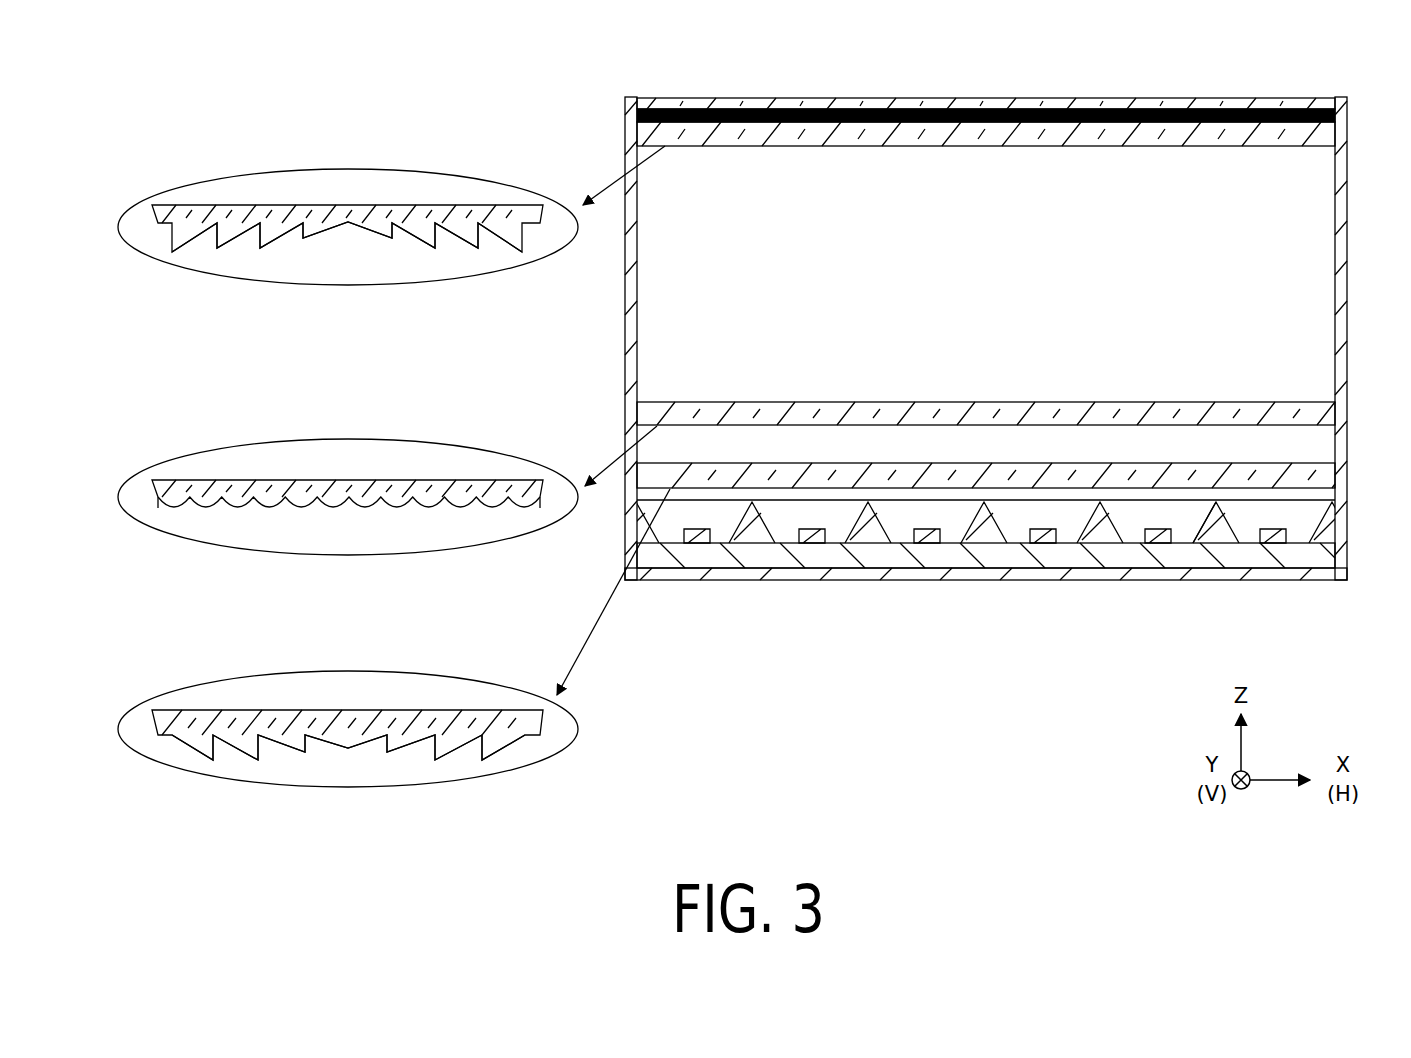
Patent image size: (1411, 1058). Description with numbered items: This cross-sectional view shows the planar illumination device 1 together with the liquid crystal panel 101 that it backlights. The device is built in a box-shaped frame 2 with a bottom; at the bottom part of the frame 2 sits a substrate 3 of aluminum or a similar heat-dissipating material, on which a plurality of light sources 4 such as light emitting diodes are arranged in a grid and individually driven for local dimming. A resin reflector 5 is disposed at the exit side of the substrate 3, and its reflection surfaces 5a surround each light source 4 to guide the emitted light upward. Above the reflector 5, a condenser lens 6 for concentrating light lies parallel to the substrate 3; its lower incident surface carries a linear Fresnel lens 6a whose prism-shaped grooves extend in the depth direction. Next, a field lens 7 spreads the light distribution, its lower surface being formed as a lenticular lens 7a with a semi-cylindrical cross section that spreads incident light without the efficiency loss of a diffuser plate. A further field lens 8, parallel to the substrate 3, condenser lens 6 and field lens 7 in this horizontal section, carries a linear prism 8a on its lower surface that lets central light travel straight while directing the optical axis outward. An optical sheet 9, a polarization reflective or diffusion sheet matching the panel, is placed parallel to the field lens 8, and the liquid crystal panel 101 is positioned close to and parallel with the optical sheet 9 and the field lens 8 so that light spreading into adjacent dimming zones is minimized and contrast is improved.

The planar illumination device 1 is at (1233, 73).
The liquid crystal panel 101 is at (1302, 100).
The frame 2 is at (1344, 266).
The substrate 3 is at (1328, 553).
The light source 4 is at (1275, 528).
The reflector 5 is at (1220, 532).
The reflection surface 5a is at (1197, 516).
The condenser lens 6 is at (1318, 478).
The linear Fresnel lens 6a is at (323, 760).
The field lens 7 is at (1330, 410).
The lenticular lens 7a is at (323, 514).
The field lens 8 is at (1327, 135).
The linear prism 8a is at (323, 250).
The optical sheet 9 is at (1337, 116).